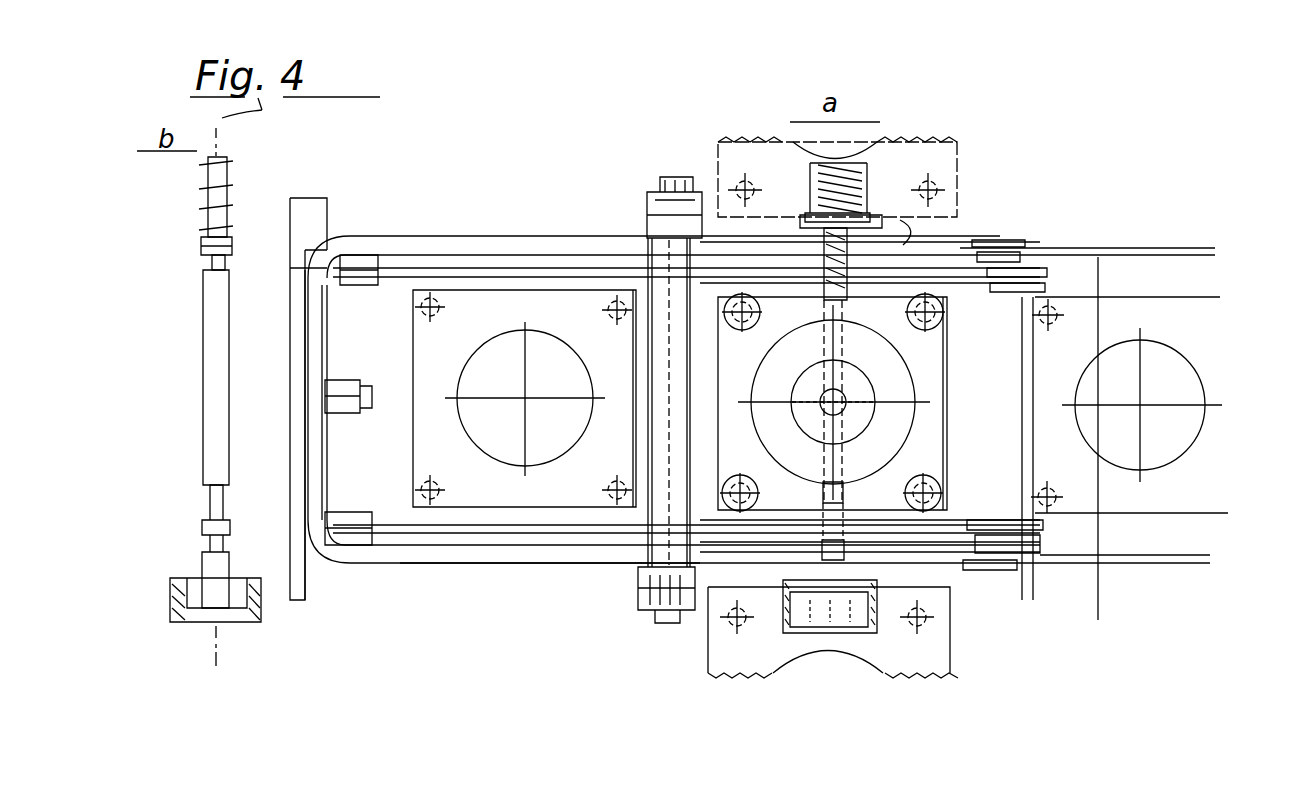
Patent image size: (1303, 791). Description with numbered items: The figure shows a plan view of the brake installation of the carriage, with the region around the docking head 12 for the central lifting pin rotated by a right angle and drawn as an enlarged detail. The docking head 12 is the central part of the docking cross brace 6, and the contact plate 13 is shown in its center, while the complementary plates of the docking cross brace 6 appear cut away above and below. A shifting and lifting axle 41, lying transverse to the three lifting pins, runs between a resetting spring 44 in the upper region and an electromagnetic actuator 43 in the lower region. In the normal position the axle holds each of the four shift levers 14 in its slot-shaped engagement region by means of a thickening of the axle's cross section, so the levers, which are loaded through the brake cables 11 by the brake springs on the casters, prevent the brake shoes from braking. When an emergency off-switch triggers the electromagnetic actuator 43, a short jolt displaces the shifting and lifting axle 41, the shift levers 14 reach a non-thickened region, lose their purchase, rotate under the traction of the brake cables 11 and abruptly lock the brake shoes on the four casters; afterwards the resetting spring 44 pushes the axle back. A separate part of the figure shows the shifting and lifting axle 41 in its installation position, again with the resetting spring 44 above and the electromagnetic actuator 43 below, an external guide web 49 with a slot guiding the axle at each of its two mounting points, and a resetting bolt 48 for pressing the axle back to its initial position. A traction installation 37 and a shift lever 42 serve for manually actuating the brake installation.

The docking cross brace 6 is at (490, 463).
The brake cable 11 is at (1082, 563).
The docking head 12 is at (758, 348).
The contact plate 13 is at (843, 412).
The shift lever 14 is at (943, 297).
The traction installation 37 is at (568, 553).
The shifting and lifting axle 41 is at (220, 465).
The shift lever 42 is at (770, 577).
The electromagnetic actuator 43 is at (878, 585).
The resetting spring 44 is at (875, 210).
The resetting bolt 48 is at (852, 428).
The external guide web 49 is at (818, 223).